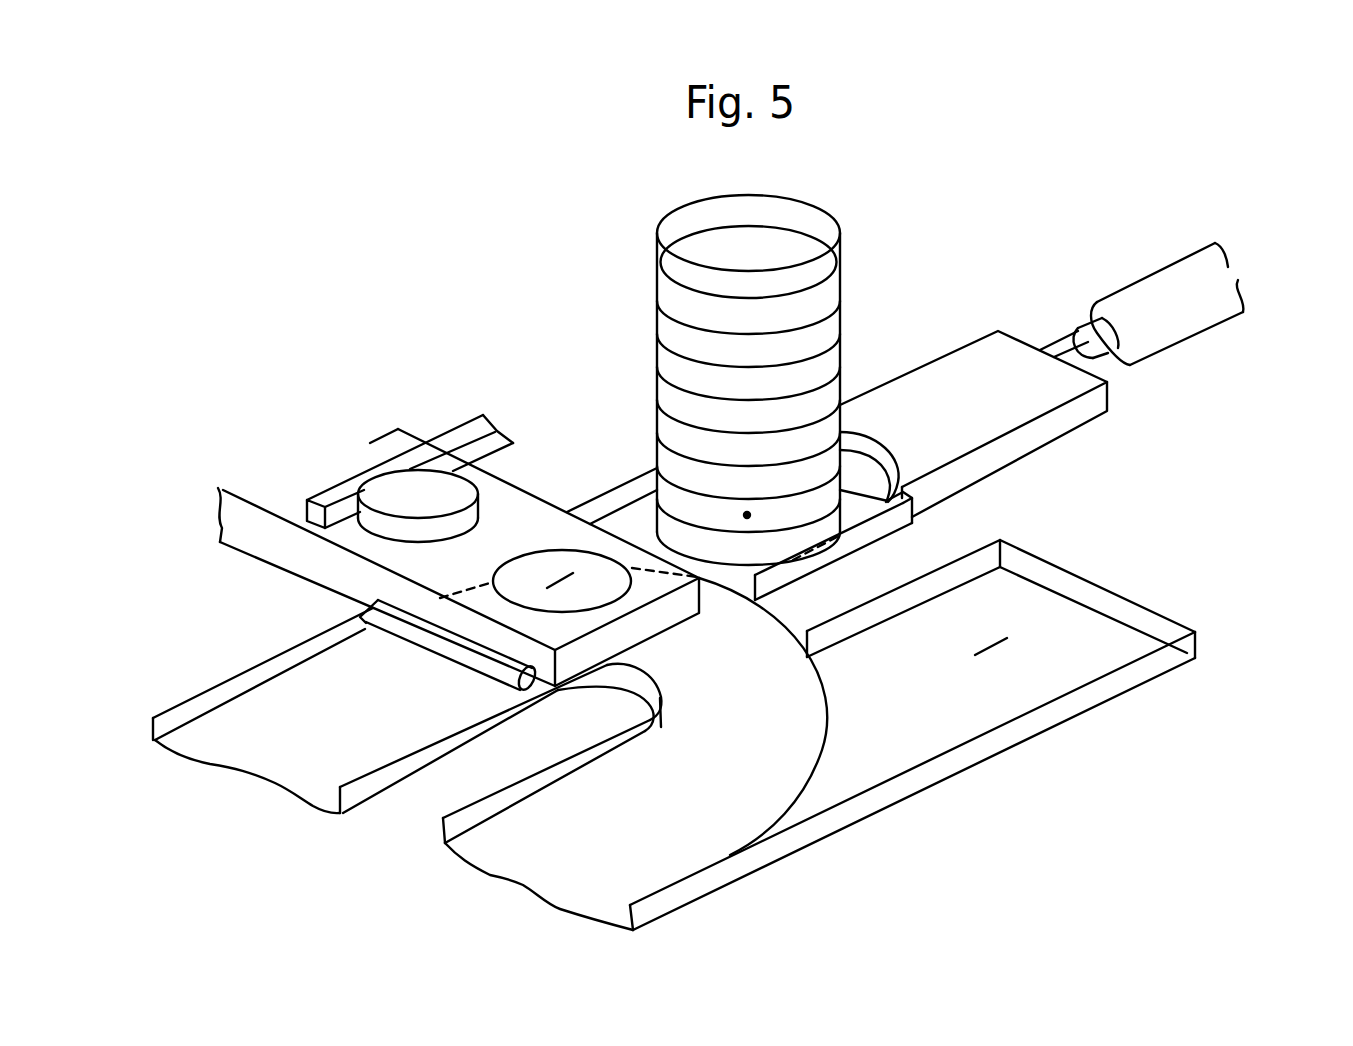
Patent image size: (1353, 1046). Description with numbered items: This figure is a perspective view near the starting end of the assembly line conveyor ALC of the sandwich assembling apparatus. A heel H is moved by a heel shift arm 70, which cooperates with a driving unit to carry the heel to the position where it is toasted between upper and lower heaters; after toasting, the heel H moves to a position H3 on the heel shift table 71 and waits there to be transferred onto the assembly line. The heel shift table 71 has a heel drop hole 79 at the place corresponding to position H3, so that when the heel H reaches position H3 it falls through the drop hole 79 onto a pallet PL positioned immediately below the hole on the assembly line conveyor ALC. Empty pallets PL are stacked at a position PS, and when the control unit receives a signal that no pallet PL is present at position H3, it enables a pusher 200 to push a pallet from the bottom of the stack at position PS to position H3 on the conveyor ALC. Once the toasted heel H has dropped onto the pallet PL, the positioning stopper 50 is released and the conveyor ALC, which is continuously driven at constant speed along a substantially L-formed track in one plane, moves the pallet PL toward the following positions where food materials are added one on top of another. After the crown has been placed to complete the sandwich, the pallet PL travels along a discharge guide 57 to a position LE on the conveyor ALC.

The positioning stopper 50 is at (386, 626).
The discharge guide 57 is at (1035, 723).
The heel shift arm 70 is at (449, 420).
The heel shift table 71 is at (538, 512).
The heel drop hole 79 is at (583, 560).
The pusher 200 is at (1025, 413).
The heel H is at (393, 500).
The pallet PL is at (832, 287).
The pallet stack position PS is at (747, 515).
The pallet discharge position LE is at (990, 646).
The heel waiting position H3 is at (558, 580).
The assembly line conveyor ALC is at (727, 835).